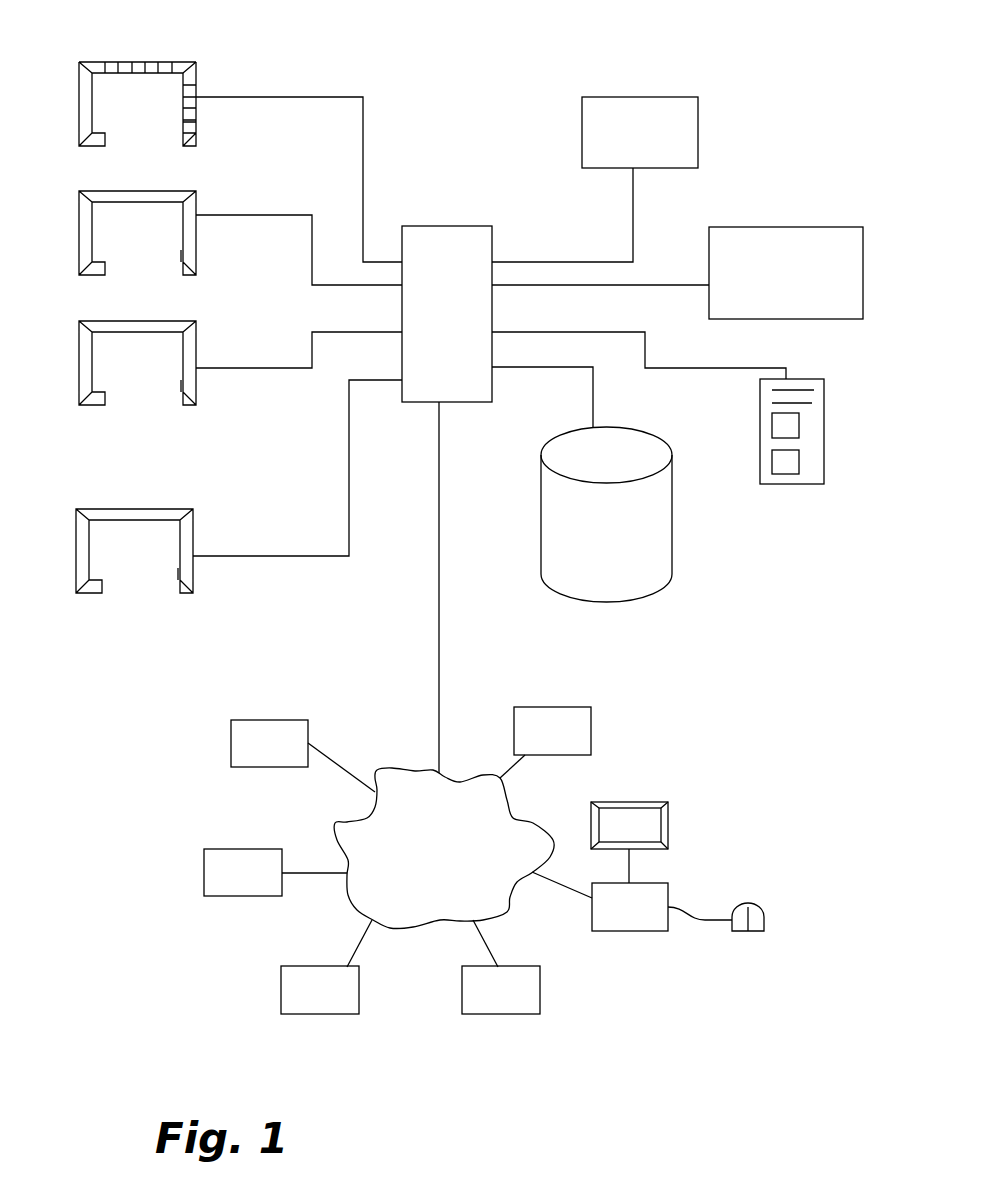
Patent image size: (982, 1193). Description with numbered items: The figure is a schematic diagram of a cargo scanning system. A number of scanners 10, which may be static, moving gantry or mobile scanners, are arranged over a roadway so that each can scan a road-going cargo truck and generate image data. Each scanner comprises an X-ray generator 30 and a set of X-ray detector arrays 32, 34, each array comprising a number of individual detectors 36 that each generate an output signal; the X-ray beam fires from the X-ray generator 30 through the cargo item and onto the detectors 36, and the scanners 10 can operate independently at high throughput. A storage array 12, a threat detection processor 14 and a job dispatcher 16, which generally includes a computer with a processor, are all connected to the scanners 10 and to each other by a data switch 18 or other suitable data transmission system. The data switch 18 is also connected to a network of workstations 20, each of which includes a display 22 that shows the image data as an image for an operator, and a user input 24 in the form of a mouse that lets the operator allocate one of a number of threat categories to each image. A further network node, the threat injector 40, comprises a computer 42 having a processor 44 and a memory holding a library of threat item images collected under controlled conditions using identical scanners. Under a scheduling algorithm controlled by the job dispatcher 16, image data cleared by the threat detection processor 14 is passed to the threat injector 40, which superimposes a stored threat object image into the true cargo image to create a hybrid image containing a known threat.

The scanners 10 is at (57, 118).
The storage array 12 is at (672, 567).
The threat detection processor 14 is at (818, 227).
The job dispatcher 16 is at (642, 97).
The data switch 18 is at (441, 226).
The workstations 20 is at (592, 721).
The display 22 is at (668, 821).
The user input 24 is at (764, 918).
The X-ray generator 30 is at (97, 145).
The X-ray detector array 32 is at (144, 62).
The X-ray detector array 34 is at (198, 80).
The individual detectors 36 is at (113, 67).
The threat injector 40 is at (824, 392).
The computer 42 is at (800, 427).
The processor 44 is at (800, 462).